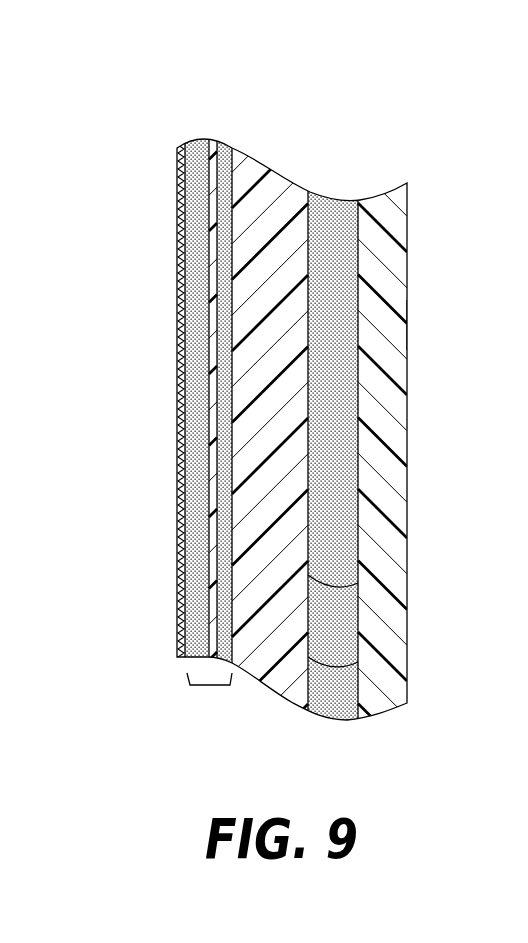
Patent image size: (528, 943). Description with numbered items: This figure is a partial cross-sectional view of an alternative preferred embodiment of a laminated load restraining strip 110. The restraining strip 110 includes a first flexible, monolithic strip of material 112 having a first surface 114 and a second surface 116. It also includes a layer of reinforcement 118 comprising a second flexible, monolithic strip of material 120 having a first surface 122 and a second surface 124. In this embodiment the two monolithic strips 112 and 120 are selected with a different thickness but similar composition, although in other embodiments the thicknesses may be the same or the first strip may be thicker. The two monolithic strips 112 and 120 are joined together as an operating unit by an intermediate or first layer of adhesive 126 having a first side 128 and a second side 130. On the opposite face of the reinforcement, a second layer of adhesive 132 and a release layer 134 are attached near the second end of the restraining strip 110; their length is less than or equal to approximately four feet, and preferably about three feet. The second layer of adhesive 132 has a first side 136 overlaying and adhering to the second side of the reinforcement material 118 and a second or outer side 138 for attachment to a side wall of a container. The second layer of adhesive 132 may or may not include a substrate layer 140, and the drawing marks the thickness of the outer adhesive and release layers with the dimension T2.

The laminated load restraining strip 110 is at (290, 394).
The first flexible monolithic strip of material 112 is at (428, 424).
The first surface 114 is at (407, 340).
The second surface 116 is at (360, 377).
The layer of reinforcement 118 is at (293, 177).
The second flexible monolithic strip of material 120 is at (262, 693).
The first surface 122 is at (360, 658).
The second surface 124 is at (209, 572).
The first layer of adhesive 126 is at (397, 459).
The first side 128 is at (365, 542).
The second side 130 is at (358, 582).
The second layer of adhesive 132 is at (221, 127).
The release layer 134 is at (177, 420).
The first side 136 is at (237, 359).
The second or outer side 138 is at (150, 400).
The substrate layer 140 is at (208, 454).
The thickness T2 is at (210, 687).